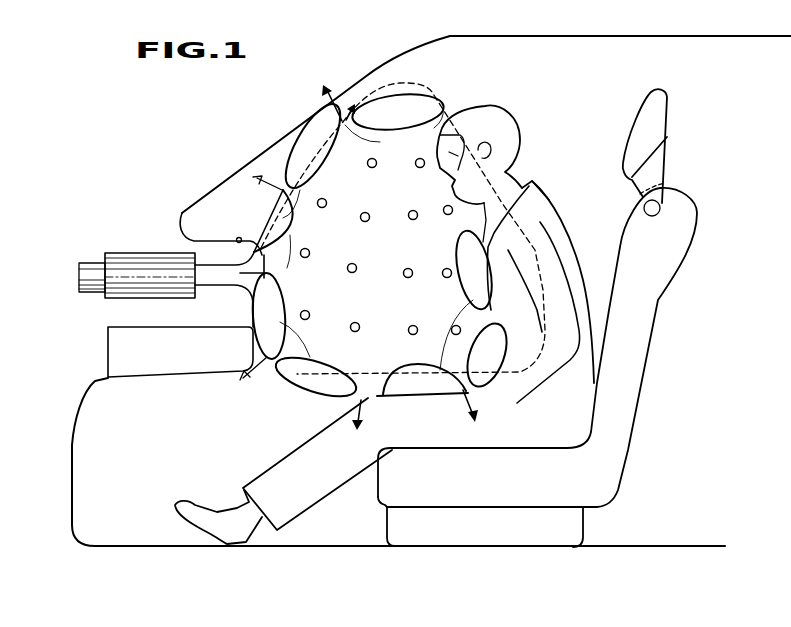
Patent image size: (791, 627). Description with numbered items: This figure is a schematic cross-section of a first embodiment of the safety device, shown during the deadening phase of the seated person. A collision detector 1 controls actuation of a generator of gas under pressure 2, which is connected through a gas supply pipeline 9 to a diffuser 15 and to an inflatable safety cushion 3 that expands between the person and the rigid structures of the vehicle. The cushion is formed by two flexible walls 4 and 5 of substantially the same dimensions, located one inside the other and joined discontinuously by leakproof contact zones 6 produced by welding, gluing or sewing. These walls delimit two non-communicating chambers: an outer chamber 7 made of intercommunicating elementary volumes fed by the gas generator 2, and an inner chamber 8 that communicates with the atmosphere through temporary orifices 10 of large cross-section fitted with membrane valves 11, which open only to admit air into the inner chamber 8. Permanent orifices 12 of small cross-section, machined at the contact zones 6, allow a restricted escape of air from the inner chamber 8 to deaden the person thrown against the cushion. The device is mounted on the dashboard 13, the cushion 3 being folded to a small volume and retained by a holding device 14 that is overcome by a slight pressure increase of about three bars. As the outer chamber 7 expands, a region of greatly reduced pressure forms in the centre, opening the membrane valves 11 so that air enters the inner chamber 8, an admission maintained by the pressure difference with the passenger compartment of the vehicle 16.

The collision detector 1 is at (88, 277).
The generator of gas under pressure 2 is at (137, 277).
The inflatable safety cushion 3 is at (301, 152).
The wall 4 is at (352, 120).
The wall 5 is at (414, 126).
The leakproof contact zones 6 is at (341, 120).
The outer chamber 7 is at (417, 91).
The inner chamber 8 is at (381, 247).
The gas supply pipeline 9 is at (214, 265).
The temporary orifices 10 is at (370, 397).
The membrane valves 11 is at (362, 385).
The permanent orifices 12 is at (280, 190).
The dashboard 13 is at (163, 353).
The holding device 14 is at (237, 240).
The diffuser 15 is at (255, 292).
The passenger compartment of the vehicle 16 is at (575, 52).